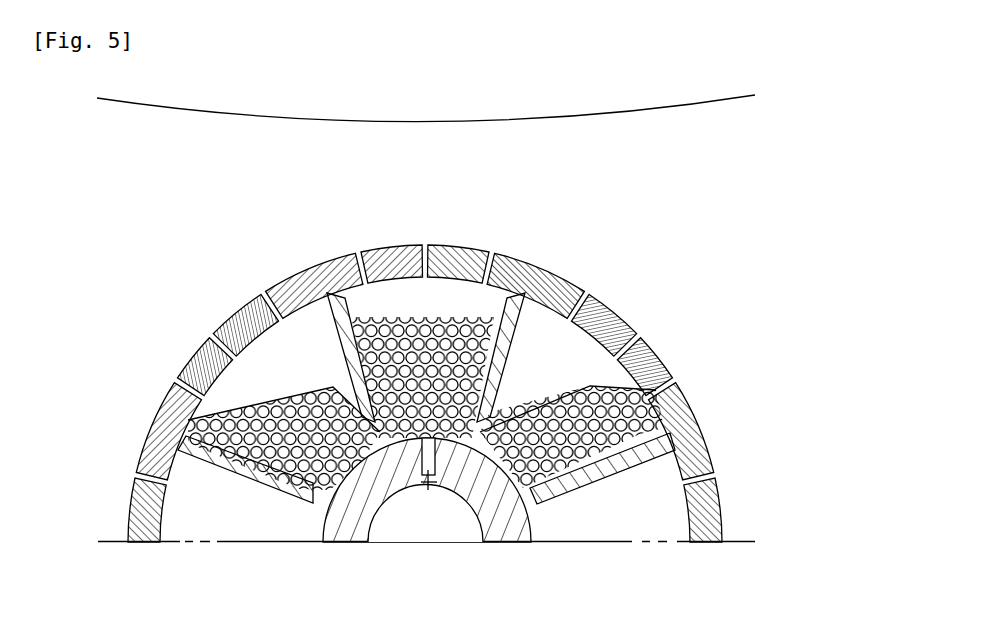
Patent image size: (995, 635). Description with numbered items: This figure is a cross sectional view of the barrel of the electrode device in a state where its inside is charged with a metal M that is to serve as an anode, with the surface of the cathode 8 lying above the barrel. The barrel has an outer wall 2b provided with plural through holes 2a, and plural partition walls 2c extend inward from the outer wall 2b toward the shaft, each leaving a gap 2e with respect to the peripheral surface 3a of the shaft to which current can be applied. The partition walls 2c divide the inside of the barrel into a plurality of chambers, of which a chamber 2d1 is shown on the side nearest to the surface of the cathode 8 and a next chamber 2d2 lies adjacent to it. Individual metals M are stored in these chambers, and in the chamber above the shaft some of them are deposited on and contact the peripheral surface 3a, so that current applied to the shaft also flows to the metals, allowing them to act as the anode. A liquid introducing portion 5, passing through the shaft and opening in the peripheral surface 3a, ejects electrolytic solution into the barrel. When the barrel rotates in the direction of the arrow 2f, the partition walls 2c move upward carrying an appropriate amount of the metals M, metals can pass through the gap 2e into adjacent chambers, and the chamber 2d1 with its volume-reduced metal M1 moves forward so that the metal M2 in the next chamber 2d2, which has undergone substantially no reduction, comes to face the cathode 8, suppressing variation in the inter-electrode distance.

The cathode 8 is at (665, 110).
The arrow 2f is at (175, 238).
The through holes 2a is at (427, 238).
The outer wall 2b is at (375, 248).
The partition walls 2c is at (309, 270).
The chamber 2d1 is at (508, 294).
The next chamber 2d2 is at (570, 337).
The gap 2e is at (723, 318).
The peripheral surface 3a is at (383, 522).
The liquid introducing portion 5 is at (431, 487).
The metal M is at (416, 335).
The metal in chamber 2d1 M1 is at (575, 275).
The metal in next chamber 2d2 M2 is at (671, 373).